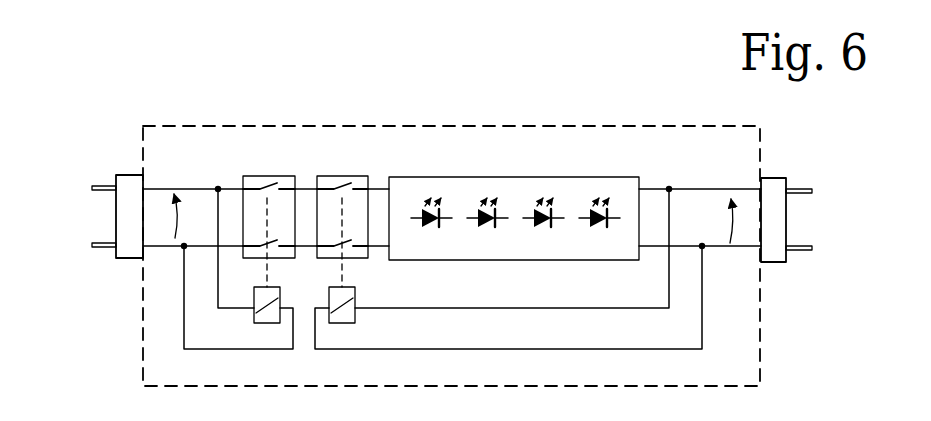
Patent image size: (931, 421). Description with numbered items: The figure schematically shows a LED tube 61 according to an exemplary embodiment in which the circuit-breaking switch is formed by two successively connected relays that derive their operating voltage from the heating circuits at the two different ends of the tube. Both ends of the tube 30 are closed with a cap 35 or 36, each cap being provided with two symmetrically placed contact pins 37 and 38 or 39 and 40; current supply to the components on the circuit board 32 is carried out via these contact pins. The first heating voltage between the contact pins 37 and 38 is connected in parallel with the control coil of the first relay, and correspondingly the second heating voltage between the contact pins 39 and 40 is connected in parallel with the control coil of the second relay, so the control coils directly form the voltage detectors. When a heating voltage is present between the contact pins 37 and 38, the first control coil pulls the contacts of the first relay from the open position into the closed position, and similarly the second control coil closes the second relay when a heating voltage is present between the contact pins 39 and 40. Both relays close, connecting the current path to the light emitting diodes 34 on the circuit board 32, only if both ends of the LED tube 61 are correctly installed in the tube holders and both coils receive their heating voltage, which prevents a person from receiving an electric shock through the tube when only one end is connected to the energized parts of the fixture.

The tube 30 is at (557, 127).
The circuit board 32 is at (595, 261).
The light emitting diode 34 is at (436, 229).
The cap 35 is at (134, 174).
The cap 36 is at (778, 178).
The contact pin 37 is at (92, 187).
The contact pin 38 is at (92, 248).
The contact pin 39 is at (812, 189).
The contact pin 40 is at (812, 250).
The LED tube 61 is at (487, 109).